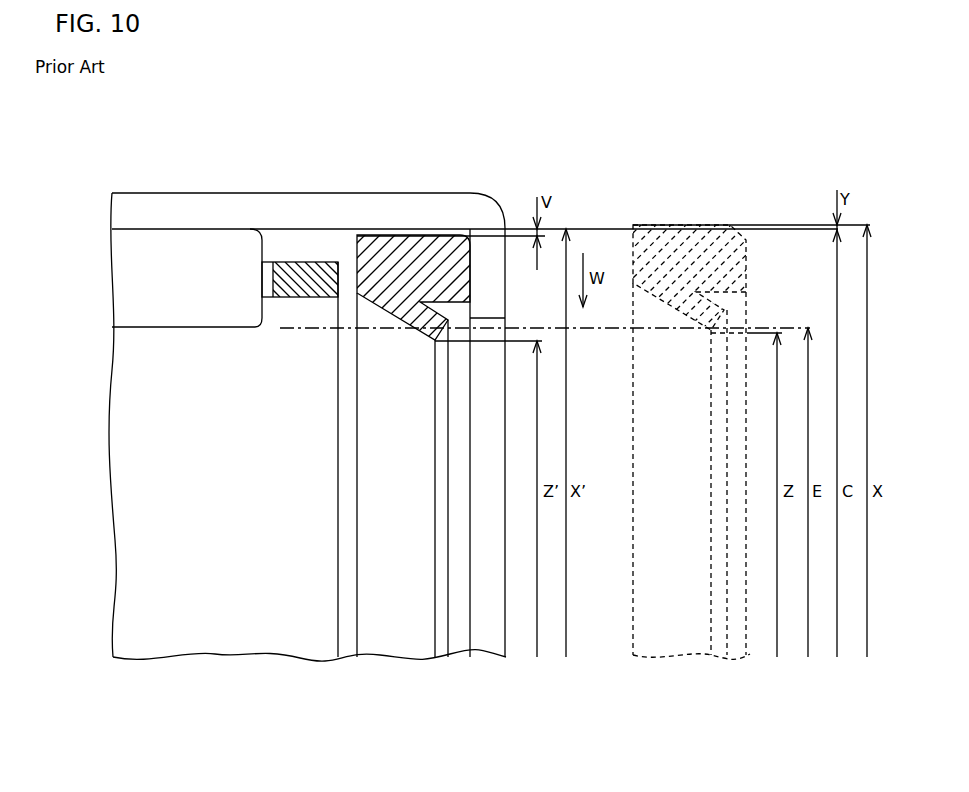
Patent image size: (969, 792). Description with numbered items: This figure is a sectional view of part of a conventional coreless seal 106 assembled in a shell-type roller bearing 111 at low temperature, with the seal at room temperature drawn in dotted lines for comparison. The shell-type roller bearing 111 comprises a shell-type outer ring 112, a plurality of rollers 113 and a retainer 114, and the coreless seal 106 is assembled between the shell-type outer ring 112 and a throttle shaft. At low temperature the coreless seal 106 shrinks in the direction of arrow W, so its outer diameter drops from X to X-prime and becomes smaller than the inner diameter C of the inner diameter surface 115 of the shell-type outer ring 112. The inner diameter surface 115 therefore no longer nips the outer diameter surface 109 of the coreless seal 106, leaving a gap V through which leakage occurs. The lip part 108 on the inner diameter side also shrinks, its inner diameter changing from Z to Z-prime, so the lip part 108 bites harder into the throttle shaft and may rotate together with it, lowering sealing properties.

The shell-type roller bearing 111 is at (487, 113).
The shell-type outer ring 112 is at (235, 210).
The rollers 113 is at (203, 255).
The retainer 114 is at (295, 268).
The inner diameter surface 115 is at (311, 229).
The coreless seal 106 is at (392, 250).
The outer diameter surface 109 is at (428, 232).
The lip part 108 is at (470, 303).